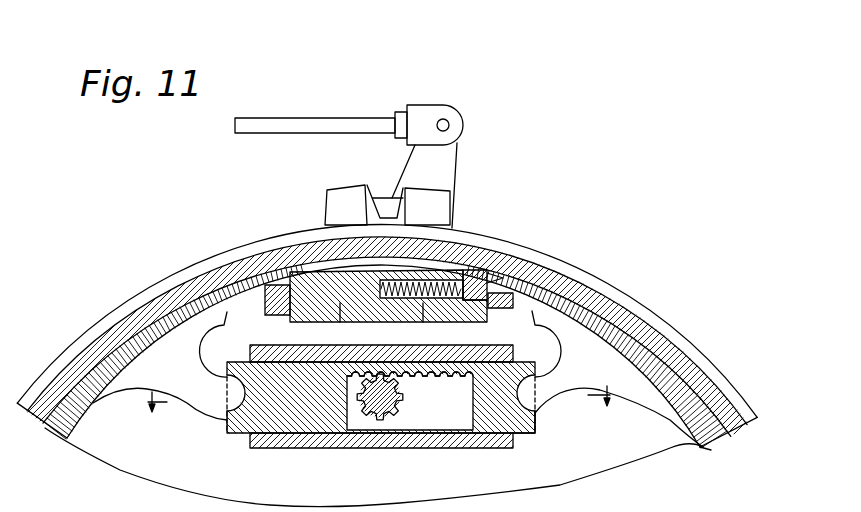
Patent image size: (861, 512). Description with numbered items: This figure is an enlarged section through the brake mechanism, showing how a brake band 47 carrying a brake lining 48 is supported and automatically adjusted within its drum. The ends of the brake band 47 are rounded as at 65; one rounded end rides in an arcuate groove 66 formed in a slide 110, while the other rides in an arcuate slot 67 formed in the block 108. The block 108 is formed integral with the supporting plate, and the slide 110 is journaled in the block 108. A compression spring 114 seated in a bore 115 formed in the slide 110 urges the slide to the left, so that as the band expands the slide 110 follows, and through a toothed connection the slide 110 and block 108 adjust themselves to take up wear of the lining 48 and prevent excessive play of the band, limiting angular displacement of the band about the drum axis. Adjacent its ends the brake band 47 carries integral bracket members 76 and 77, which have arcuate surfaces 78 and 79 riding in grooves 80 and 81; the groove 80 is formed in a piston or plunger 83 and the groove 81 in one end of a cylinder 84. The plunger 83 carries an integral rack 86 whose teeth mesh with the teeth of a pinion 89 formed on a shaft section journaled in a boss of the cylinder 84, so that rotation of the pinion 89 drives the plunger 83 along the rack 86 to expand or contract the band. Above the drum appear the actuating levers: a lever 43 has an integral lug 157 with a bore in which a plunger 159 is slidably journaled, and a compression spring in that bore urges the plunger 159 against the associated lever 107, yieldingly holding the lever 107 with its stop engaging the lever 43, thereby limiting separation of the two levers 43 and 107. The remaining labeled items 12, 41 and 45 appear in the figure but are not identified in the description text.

The direction arrow 12 is at (376, 404).
The handle rod 41 is at (316, 121).
The lever 43 is at (453, 153).
The dome shell 45 is at (683, 372).
The brake band 47 is at (705, 448).
The brake lining 48 is at (715, 438).
The rounded end 65 is at (257, 315).
The arcuate groove 66 is at (278, 313).
The arcuate slot 67 is at (488, 270).
The bracket member 76 is at (190, 390).
The bracket member 77 is at (567, 380).
The arcuate surface 78 is at (242, 415).
The arcuate surface 79 is at (527, 427).
The groove 80 is at (214, 344).
The groove 81 is at (525, 360).
The piston or plunger 83 is at (315, 420).
The cylinder 84 is at (495, 412).
The rack 86 is at (447, 370).
The pinion 89 is at (400, 400).
The lever 107 is at (337, 203).
The block 108 is at (477, 301).
The slide 110 is at (340, 303).
The compression spring 114 is at (423, 303).
The bore 115 is at (397, 303).
The lug 157 is at (422, 196).
The plunger 159 is at (382, 195).